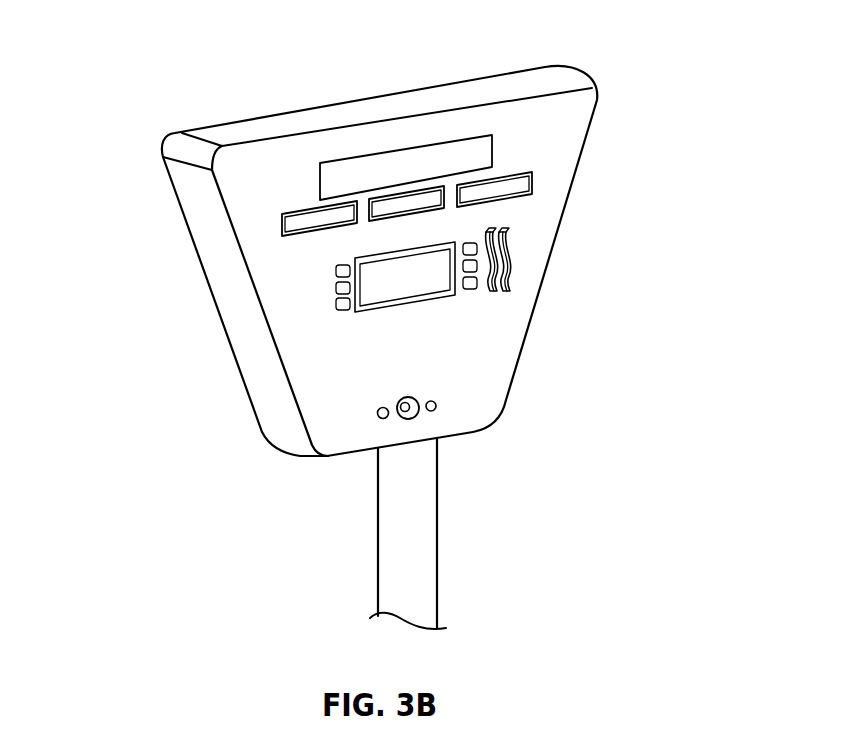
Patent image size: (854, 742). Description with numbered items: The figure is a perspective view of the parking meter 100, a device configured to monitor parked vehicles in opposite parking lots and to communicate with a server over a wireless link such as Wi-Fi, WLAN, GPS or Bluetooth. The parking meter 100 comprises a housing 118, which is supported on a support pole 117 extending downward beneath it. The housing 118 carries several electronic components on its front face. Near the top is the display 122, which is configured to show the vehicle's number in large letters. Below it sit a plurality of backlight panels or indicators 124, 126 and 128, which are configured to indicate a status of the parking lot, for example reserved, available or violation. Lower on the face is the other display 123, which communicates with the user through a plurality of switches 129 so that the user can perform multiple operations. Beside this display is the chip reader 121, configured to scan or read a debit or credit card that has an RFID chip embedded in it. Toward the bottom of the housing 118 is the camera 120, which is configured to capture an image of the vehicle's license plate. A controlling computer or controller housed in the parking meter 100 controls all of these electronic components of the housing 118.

The parking meter 100 is at (146, 66).
The support pole 117 is at (378, 528).
The housing 118 is at (590, 126).
The camera 120 is at (417, 418).
The chip reader 121 is at (512, 249).
The display 122 is at (366, 156).
The display 123 is at (478, 287).
The backlight panel or indicator 124 is at (284, 213).
The backlight panel or indicator 126 is at (473, 204).
The backlight panel or indicator 128 is at (528, 172).
The plurality of switches 129 is at (335, 303).